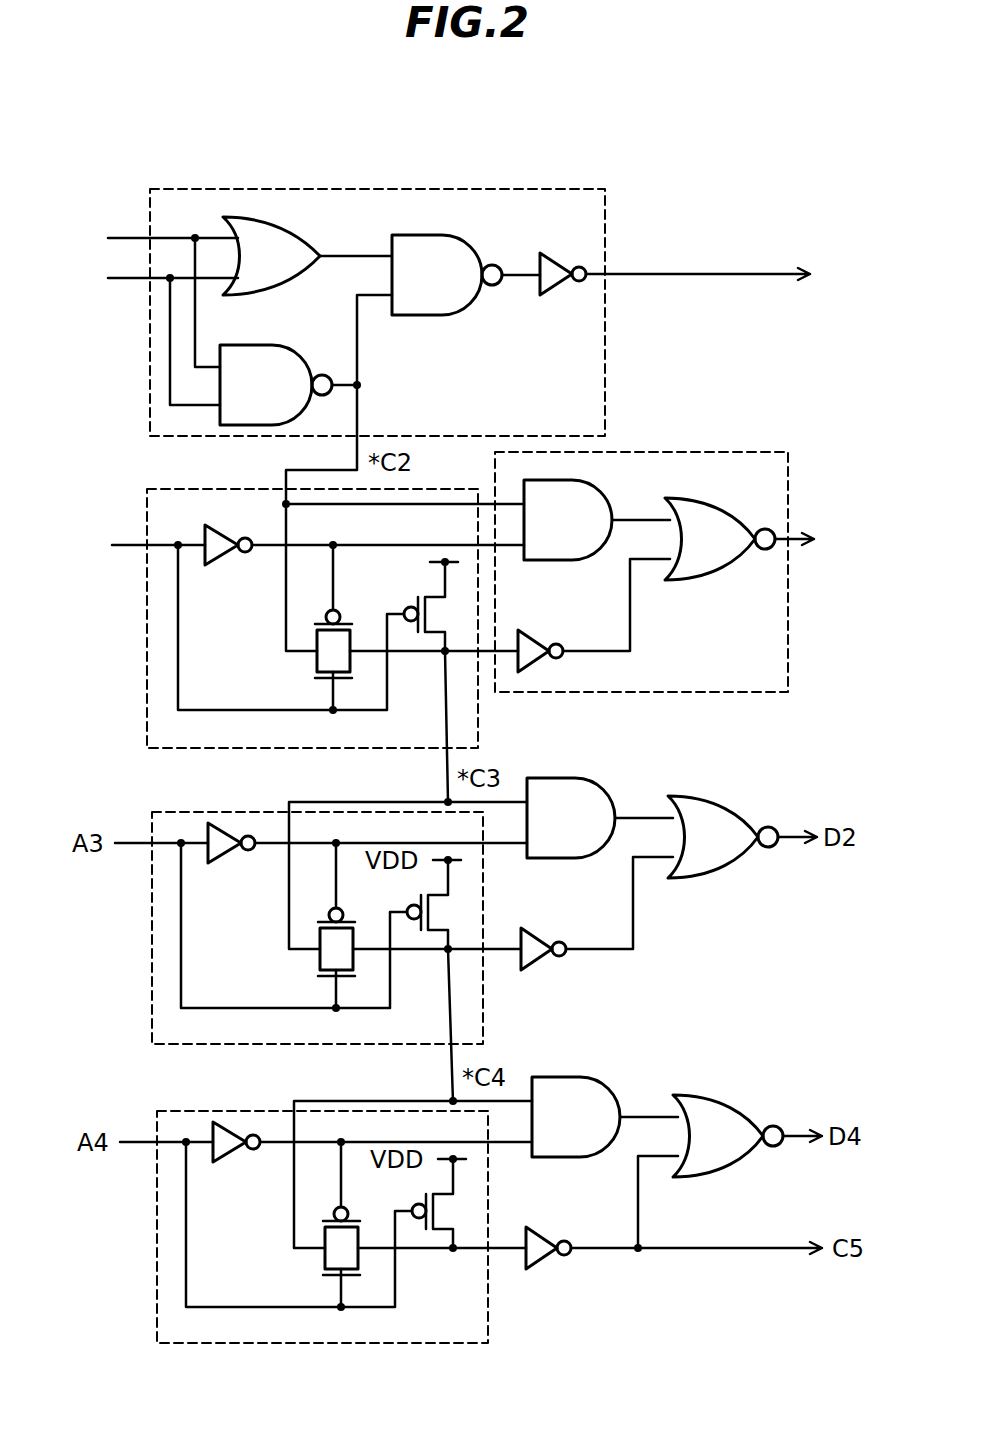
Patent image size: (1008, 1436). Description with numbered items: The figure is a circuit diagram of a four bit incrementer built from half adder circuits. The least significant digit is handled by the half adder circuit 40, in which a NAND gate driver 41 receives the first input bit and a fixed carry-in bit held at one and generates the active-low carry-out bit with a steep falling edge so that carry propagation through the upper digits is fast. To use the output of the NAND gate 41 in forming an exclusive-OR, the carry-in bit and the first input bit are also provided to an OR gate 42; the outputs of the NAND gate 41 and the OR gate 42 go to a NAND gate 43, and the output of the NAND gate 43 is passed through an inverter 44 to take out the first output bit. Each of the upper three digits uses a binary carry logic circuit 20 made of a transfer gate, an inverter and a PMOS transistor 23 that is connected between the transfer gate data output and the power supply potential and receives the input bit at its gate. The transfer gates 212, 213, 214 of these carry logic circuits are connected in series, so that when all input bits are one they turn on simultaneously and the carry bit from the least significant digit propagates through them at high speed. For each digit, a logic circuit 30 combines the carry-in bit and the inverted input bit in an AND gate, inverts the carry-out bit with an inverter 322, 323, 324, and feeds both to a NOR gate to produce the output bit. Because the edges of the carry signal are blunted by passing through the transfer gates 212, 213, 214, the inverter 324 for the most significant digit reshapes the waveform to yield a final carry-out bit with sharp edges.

The half adder circuit 40 is at (393, 188).
The NAND gate driver 41 is at (290, 345).
The OR gate 42 is at (306, 226).
The NAND gate 43 is at (440, 316).
The inverter 44 is at (557, 280).
The binary carry logic circuit 20 is at (147, 641).
The PMOS transistor 23 is at (424, 597).
The transfer gate 212 is at (317, 658).
The transfer gate 213 is at (291, 925).
The transfer gate 214 is at (296, 1224).
The logic circuit 30 is at (683, 451).
The inverter 322 is at (537, 633).
The inverter 323 is at (561, 938).
The inverter 324 is at (566, 1237).